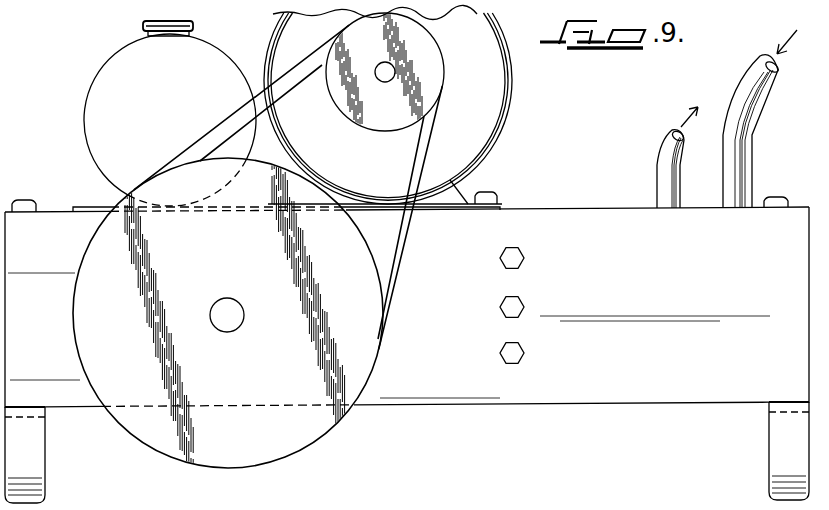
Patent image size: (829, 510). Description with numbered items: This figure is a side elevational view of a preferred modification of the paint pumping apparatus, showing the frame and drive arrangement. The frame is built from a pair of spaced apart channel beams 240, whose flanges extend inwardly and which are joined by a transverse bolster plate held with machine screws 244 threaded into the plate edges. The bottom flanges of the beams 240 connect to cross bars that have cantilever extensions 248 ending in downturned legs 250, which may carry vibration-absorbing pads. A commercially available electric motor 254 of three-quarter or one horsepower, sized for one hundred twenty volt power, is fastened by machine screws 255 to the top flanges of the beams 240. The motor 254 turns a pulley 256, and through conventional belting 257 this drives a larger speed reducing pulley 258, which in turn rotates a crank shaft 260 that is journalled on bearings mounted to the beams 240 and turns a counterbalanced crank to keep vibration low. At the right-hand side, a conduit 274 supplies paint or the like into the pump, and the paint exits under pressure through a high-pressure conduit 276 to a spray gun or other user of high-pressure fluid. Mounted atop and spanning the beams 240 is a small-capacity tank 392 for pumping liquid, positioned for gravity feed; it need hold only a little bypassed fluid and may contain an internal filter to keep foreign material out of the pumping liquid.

The channel beams 240 is at (561, 216).
The machine screws 244 is at (517, 301).
The cantilever extensions 248 is at (22, 405).
The downturned legs 250 is at (36, 460).
The electric motor 254 is at (503, 95).
The machine screws 255 is at (497, 172).
The pulley 256 is at (437, 63).
The belting 257 is at (403, 240).
The speed reducing pulley 258 is at (317, 430).
The crank shaft 260 is at (239, 307).
The conduit 274 is at (738, 100).
The high-pressure conduit 276 is at (657, 179).
The tank 392 is at (174, 88).